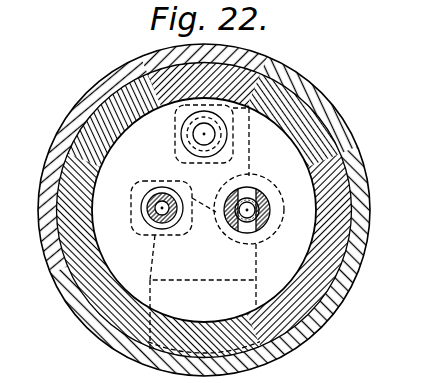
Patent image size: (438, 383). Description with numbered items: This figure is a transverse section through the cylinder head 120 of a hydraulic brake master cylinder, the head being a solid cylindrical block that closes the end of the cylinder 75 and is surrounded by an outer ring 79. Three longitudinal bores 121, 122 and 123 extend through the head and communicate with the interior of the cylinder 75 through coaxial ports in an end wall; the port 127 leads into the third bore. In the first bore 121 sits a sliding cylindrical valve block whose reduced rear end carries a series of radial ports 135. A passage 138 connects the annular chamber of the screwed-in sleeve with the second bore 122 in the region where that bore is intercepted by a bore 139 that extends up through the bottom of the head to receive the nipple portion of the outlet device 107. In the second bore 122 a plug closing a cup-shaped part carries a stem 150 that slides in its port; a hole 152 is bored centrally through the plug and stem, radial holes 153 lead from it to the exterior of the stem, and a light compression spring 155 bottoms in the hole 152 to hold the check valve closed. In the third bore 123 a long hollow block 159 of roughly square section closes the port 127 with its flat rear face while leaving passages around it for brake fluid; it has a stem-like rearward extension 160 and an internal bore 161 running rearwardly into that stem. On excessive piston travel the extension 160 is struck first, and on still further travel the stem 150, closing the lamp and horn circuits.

The cylinder 75 is at (319, 137).
The outer casing ring 79 is at (316, 84).
The outlet device 107 is at (287, 360).
The cylinder head 120 is at (113, 251).
The longitudinal bore 121 is at (250, 126).
The longitudinal bore 122 is at (266, 190).
The longitudinal bore 123 is at (150, 178).
The port 127 is at (148, 218).
The radial ports 135 is at (176, 134).
The passage 138 is at (257, 144).
The bore 139 is at (257, 268).
The stem 150 is at (271, 203).
The hole 152 is at (268, 214).
The radial holes 153 is at (253, 228).
The compression spring 155 is at (232, 196).
The block 159 is at (160, 238).
The rearward extension 160 is at (160, 207).
The bore 161 is at (145, 195).